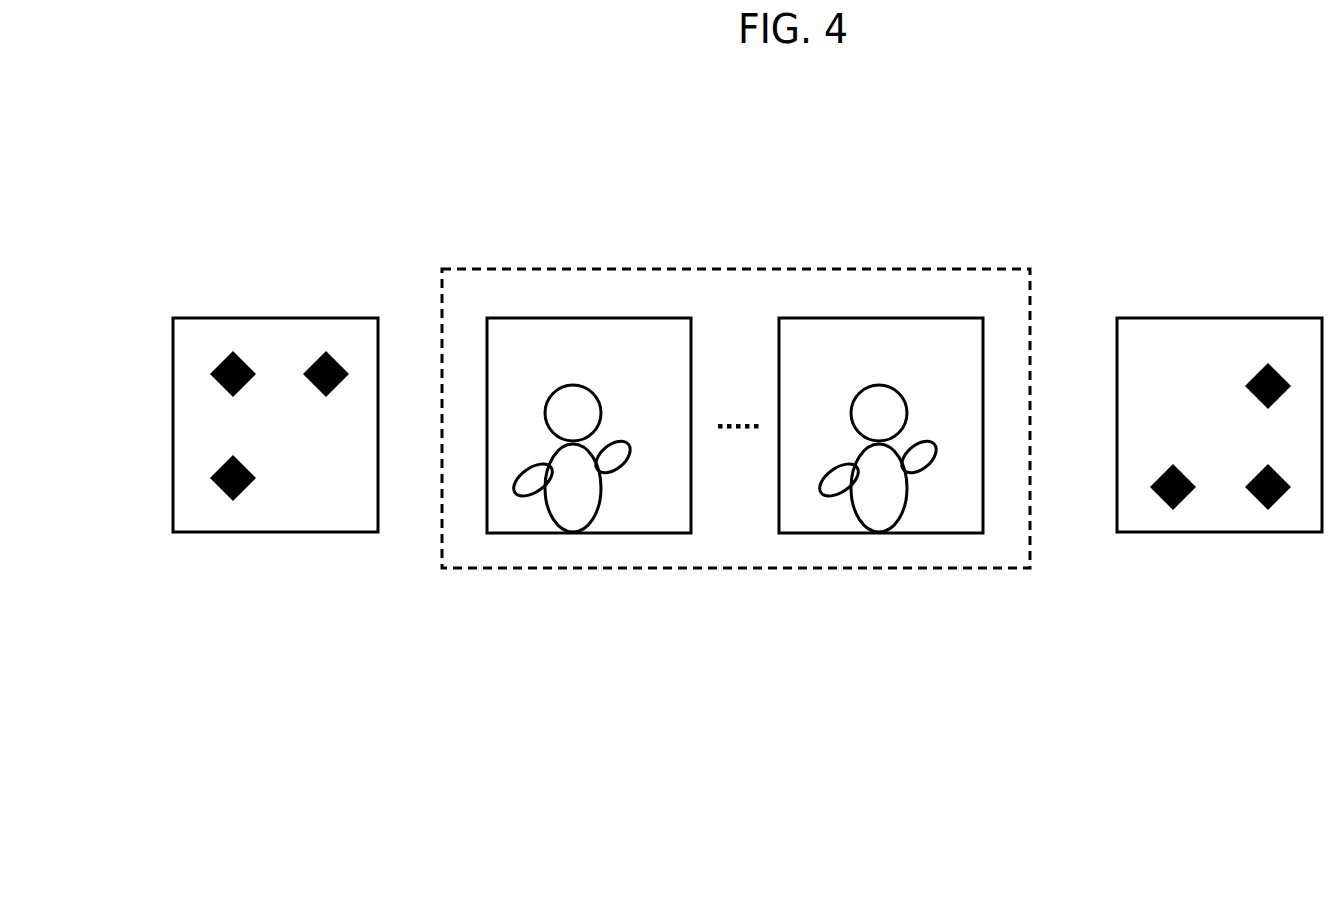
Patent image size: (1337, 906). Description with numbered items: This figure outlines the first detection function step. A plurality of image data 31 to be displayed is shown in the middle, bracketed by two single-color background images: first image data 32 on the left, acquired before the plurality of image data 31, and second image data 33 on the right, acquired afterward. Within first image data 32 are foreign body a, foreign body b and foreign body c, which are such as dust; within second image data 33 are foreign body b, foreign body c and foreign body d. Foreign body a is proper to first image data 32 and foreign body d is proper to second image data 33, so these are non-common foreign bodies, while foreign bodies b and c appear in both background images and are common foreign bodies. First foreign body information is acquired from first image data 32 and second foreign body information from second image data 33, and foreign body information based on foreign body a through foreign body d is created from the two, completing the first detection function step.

The plurality of image data to be displayed 31 is at (759, 268).
The first image data 32 is at (215, 317).
The second image data 33 is at (1158, 317).
The foreign body a is at (243, 358).
The foreign body b is at (330, 353).
The foreign body c is at (232, 500).
The foreign body d is at (1275, 502).